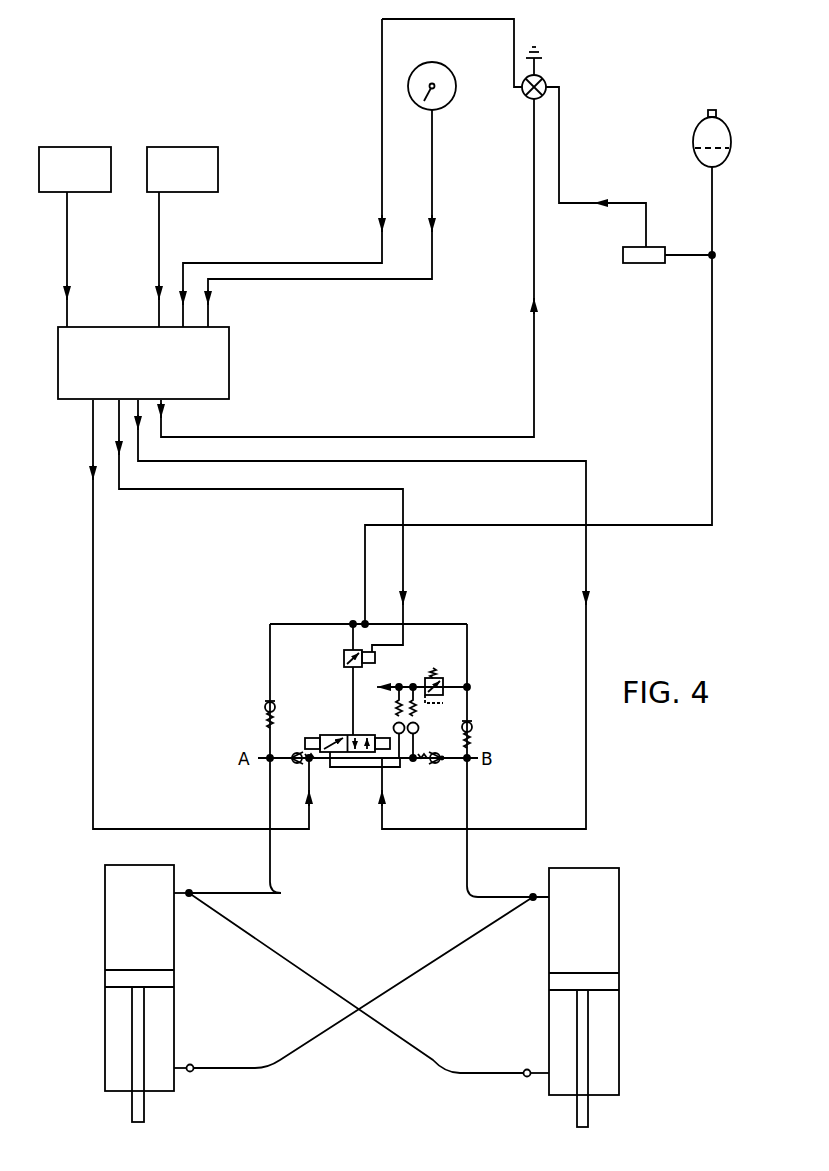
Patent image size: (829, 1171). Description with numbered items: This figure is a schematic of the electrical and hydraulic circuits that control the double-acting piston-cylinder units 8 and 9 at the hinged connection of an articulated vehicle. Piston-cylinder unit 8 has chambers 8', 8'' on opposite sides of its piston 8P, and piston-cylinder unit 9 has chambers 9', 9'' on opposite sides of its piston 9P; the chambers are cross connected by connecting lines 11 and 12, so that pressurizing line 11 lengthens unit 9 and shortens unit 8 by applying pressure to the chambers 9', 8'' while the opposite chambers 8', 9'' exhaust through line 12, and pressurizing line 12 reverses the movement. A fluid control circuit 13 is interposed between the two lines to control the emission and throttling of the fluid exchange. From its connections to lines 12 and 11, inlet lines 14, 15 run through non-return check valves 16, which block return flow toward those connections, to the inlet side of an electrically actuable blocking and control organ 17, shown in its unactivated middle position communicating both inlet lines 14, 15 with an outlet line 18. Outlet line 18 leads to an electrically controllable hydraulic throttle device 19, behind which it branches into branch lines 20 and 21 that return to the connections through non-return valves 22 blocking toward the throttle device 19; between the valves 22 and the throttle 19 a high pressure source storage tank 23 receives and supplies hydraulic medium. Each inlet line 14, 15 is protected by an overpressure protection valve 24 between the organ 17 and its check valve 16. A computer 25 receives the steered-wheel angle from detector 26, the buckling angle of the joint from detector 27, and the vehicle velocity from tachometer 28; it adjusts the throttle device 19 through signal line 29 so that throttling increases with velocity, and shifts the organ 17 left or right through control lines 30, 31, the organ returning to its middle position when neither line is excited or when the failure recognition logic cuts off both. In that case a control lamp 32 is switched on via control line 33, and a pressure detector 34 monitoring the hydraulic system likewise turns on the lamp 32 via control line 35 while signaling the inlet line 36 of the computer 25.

The piston-cylinder unit 8 is at (135, 993).
The chamber 8' is at (158, 913).
The chamber 8'' is at (150, 1054).
The piston 8P is at (174, 984).
The piston-cylinder unit 9 is at (606, 997).
The chamber 9' is at (563, 917).
The chamber 9'' is at (596, 1058).
The piston 9P is at (620, 988).
The connecting line 11 is at (217, 1068).
The connecting line 12 is at (255, 930).
The fluid control circuit 13 is at (236, 618).
The inlet line 14 is at (273, 761).
The inlet line 15 is at (442, 761).
The non-return check valve 16 is at (295, 752).
The blocking and control organ 17 is at (351, 735).
The outlet line 18 is at (353, 690).
The hydraulic throttle device 19 is at (344, 658).
The branch line 20 is at (270, 672).
The branch line 21 is at (467, 684).
The non-return valve 22 is at (265, 708).
The high pressure source storage tank 23 is at (730, 142).
The overpressure protection valve 24 is at (440, 678).
The computer 25 is at (135, 378).
The detector 26 is at (86, 183).
The detector 27 is at (193, 183).
The tachometer 28 is at (456, 88).
The signal line 29 is at (252, 489).
The control line 30 is at (492, 461).
The control line 31 is at (93, 545).
The control lamp 32 is at (523, 97).
The control line 33 is at (418, 437).
The pressure detector 34 is at (623, 255).
The control line 35 is at (622, 203).
The inlet line 36 is at (266, 263).